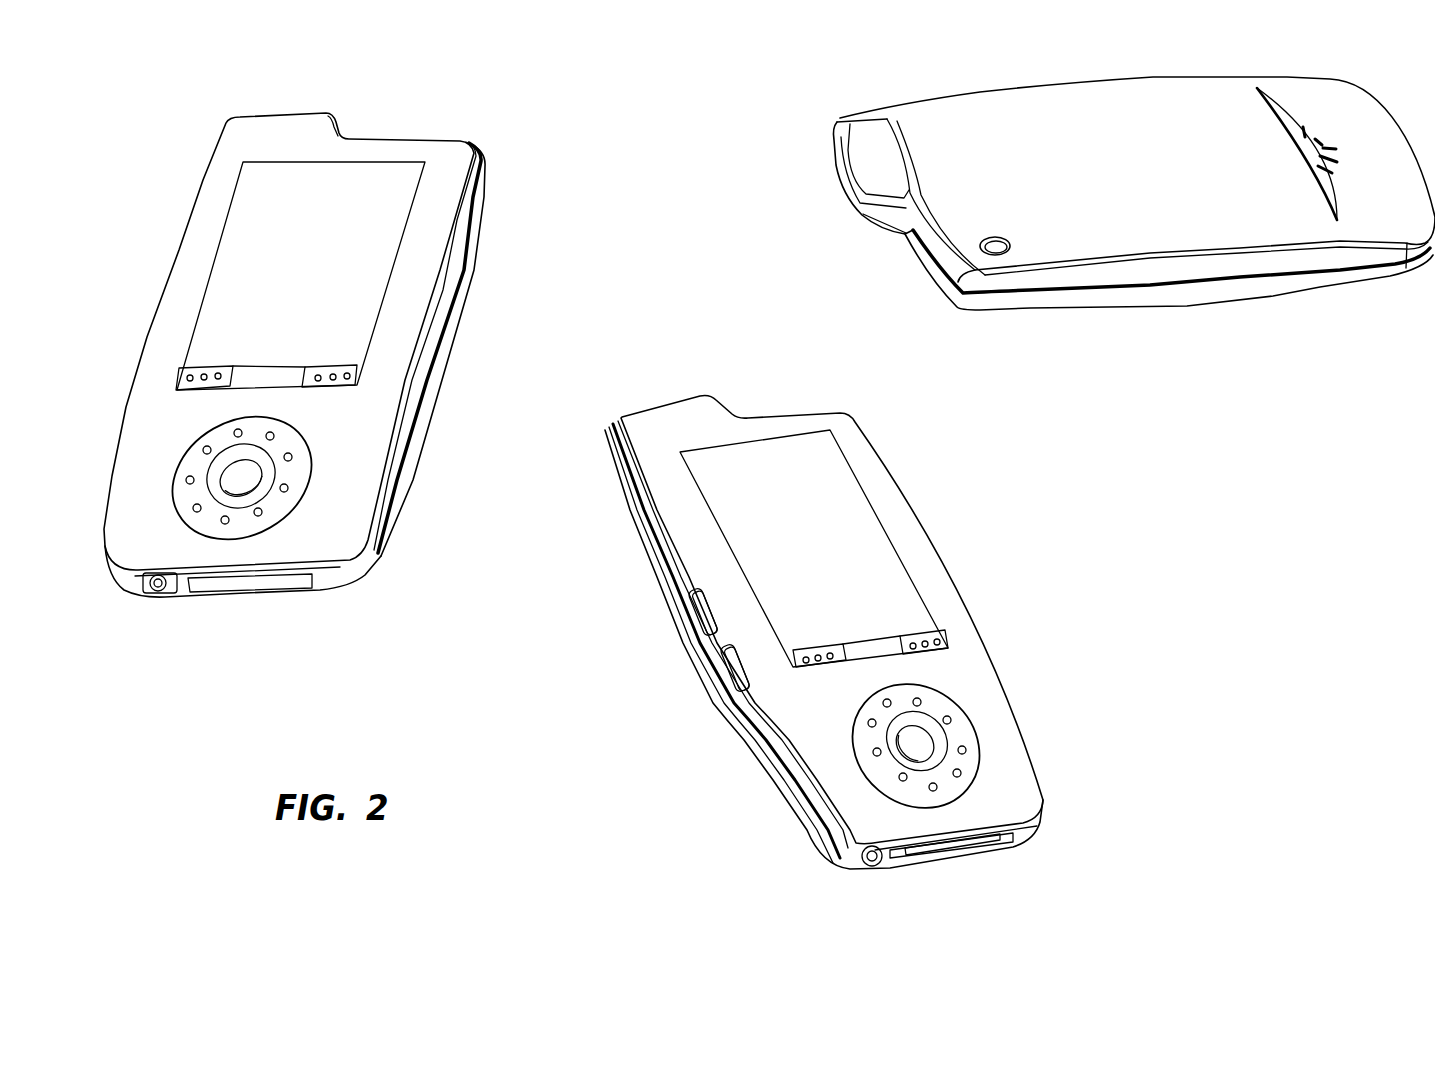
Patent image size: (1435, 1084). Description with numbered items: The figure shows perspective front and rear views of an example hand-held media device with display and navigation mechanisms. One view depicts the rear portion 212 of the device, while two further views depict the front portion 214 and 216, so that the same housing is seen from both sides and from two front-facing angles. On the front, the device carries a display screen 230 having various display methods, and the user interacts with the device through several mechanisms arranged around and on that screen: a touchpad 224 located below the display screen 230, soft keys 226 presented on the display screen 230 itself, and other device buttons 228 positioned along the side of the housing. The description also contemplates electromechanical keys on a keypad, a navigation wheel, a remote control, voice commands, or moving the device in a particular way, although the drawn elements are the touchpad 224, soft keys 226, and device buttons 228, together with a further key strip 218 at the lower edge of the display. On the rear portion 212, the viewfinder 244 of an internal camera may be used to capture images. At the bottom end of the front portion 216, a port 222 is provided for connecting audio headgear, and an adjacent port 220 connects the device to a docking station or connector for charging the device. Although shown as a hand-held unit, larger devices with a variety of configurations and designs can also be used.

The rear portion 212 is at (1217, 307).
The front portion 214 is at (453, 332).
The front portion 216 is at (927, 545).
The right button strip 218 is at (950, 633).
The port 220 is at (963, 847).
The port 222 is at (868, 870).
The touchpad 224 is at (867, 747).
The soft keys 226 is at (797, 660).
The device buttons 228 is at (730, 663).
The display screen 230 is at (757, 537).
The viewfinder 244 is at (980, 248).